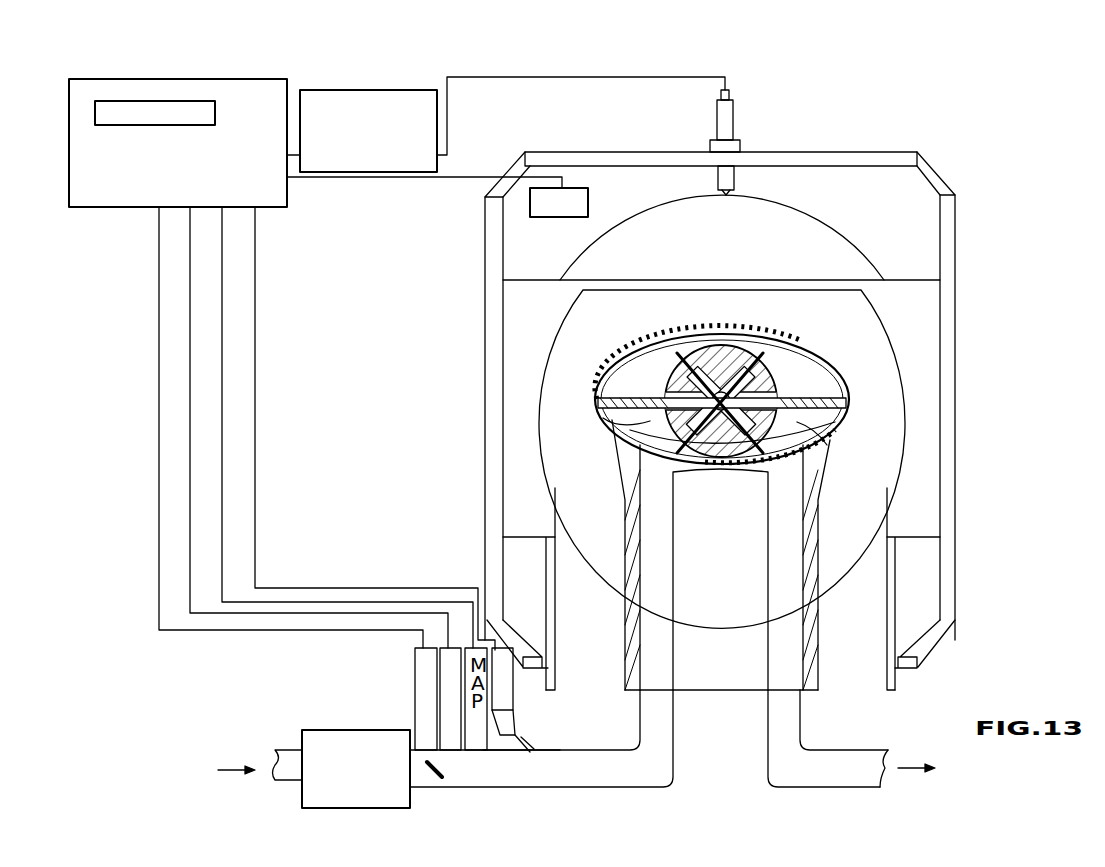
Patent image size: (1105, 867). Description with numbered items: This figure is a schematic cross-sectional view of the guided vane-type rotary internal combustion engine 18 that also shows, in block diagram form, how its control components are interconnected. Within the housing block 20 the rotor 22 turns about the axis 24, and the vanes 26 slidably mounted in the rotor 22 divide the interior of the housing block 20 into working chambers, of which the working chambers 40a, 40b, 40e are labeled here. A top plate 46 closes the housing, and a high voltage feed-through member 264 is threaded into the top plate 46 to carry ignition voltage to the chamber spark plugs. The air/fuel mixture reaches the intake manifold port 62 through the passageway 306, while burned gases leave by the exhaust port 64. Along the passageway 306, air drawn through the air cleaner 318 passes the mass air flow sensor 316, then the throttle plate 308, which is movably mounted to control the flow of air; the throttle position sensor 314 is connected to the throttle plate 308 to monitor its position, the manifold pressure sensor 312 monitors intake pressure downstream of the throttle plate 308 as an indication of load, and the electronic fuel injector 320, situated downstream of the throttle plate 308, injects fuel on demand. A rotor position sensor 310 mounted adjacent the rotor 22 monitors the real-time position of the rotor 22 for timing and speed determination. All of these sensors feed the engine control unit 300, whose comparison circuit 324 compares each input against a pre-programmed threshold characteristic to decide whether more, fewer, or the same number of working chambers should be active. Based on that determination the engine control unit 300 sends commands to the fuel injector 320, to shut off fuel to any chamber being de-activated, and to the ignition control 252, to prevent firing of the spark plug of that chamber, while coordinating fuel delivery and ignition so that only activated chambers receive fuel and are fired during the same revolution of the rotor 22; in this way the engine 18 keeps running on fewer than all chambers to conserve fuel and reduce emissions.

The internal combustion engine 18 is at (888, 151).
The housing block 20 is at (903, 280).
The rotor 22 is at (840, 380).
The axis 24 is at (720, 406).
The vanes 26 is at (837, 422).
The working chamber 40a is at (606, 425).
The working chamber 40b is at (668, 396).
The working chamber 40e is at (800, 424).
The top plate 46 is at (825, 151).
The intake manifold port 62 is at (658, 698).
The exhaust port 64 is at (787, 690).
The ignition control 252 is at (385, 90).
The high voltage feed-through member 264 is at (735, 110).
The engine control unit 300 is at (62, 197).
The passageway 306 is at (650, 787).
The throttle plate 308 is at (432, 780).
The rotor position sensor 310 is at (575, 188).
The manifold pressure sensor 312 is at (483, 752).
The throttle position sensor 314 is at (450, 647).
The mass air flow sensor 316 is at (415, 690).
The air cleaner 318 is at (366, 808).
The electronic fuel injector 320 is at (515, 692).
The comparison circuit 324 is at (170, 100).